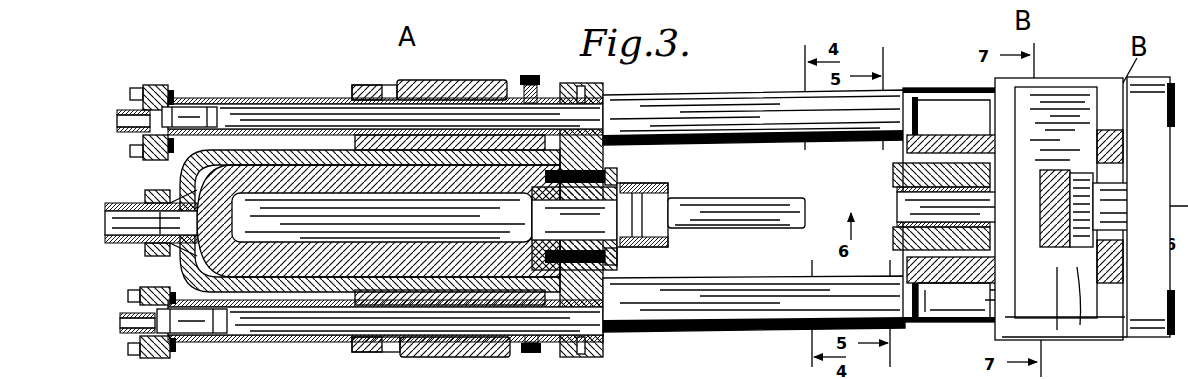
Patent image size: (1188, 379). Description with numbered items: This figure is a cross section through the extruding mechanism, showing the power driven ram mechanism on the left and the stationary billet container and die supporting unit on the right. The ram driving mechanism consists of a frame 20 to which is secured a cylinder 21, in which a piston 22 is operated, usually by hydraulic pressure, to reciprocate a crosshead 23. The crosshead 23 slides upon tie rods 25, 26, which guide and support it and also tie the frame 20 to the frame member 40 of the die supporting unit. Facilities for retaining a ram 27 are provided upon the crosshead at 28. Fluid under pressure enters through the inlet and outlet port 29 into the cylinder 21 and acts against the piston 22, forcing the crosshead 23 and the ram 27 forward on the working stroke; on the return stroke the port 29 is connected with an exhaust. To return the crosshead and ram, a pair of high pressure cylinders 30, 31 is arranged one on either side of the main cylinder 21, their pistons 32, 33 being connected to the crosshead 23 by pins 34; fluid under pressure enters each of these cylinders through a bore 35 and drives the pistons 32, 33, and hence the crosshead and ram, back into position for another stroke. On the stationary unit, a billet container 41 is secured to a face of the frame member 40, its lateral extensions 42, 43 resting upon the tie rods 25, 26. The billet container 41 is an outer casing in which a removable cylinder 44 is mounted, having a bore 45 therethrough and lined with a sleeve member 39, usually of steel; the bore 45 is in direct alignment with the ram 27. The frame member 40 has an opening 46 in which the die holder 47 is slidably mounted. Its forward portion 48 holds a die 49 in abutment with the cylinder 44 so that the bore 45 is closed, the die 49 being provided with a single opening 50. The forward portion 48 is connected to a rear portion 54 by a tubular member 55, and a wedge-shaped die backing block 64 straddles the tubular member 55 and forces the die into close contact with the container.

The frame 20 is at (453, 83).
The cylinder 21 is at (187, 175).
The piston 22 is at (207, 250).
The crosshead 23 is at (612, 88).
The tie rod 25 is at (739, 285).
The tie rod 26 is at (731, 107).
The ram 27 is at (730, 210).
The ram retaining facilities 28 is at (660, 183).
The inlet and outlet port 29 is at (110, 227).
The high pressure cylinder 30 is at (267, 104).
The high pressure cylinder 31 is at (270, 347).
The piston 32 is at (190, 112).
The piston 33 is at (198, 347).
The pin 34 is at (582, 86).
The bore 35 is at (531, 83).
The sleeve member 39 is at (897, 210).
The frame member 40 is at (1086, 90).
The billet container 41 is at (913, 148).
The lateral extension 42 is at (937, 110).
The lateral extension 43 is at (924, 327).
The removable cylinder 44 is at (898, 188).
The bore 45 is at (903, 220).
The opening 46 is at (1017, 168).
The die holder 47 is at (987, 323).
The forward portion 48 is at (977, 288).
The die 49 is at (977, 160).
The die opening 50 is at (955, 299).
The rear portion 54 is at (1127, 220).
The tubular member 55 is at (1080, 325).
The die backing block 64 is at (1060, 330).